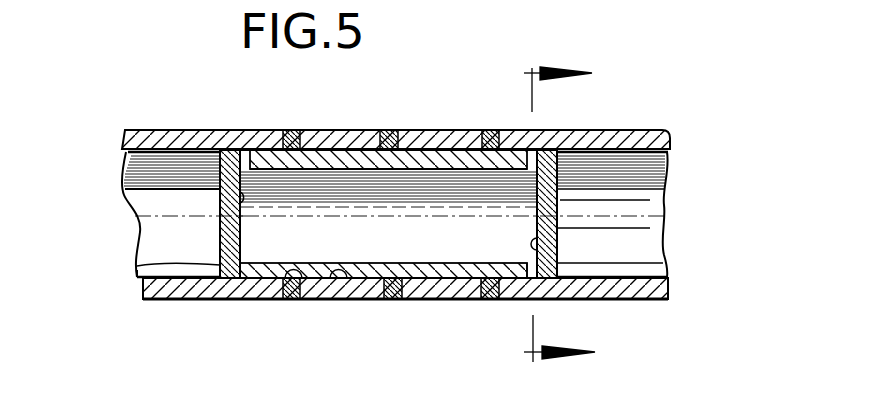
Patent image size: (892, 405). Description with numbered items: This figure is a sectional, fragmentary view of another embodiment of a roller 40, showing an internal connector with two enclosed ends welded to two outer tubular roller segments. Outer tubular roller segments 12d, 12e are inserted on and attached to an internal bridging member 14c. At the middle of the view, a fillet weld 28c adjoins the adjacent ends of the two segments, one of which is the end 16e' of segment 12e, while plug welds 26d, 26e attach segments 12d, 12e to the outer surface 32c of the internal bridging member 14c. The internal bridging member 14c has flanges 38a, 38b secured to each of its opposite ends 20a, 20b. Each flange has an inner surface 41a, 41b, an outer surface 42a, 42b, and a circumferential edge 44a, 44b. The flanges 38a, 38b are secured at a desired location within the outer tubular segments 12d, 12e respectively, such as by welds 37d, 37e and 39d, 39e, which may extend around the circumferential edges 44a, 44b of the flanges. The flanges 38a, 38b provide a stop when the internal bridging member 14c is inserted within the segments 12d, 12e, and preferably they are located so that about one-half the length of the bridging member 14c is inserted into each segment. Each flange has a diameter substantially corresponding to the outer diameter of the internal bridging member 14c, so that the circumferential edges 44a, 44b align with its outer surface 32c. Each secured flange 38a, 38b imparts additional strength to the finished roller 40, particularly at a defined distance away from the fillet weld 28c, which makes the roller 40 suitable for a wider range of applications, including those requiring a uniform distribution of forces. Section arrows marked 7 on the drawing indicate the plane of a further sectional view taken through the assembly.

The roller 40 is at (673, 130).
The adjacent end of outer tubular roller segment 16e' is at (388, 107).
The plug weld 26d is at (290, 130).
The fillet weld 28c is at (392, 130).
The plug weld 26e is at (493, 130).
The circumferential edge 44a is at (233, 276).
The circumferential edge 44b is at (555, 150).
The inner surface 41a is at (239, 197).
The outer surface 42a is at (236, 218).
The inner surface 41b is at (537, 250).
The internal bridging member 14c is at (441, 264).
The opposite end of internal bridging member 20a is at (285, 278).
The outer surface of internal bridging member 32c is at (347, 276).
The opposite end of internal bridging member 20b is at (533, 278).
The flange 38a is at (217, 300).
The outer tubular roller segment 12d is at (200, 133).
The weld 37d is at (215, 162).
The weld 37e is at (134, 272).
The outer tubular roller segment 12e is at (645, 137).
The weld 39d is at (575, 170).
The outer surface 42b is at (650, 200).
The flange 38b is at (650, 228).
The weld 39e is at (663, 264).
The section line 7- 7 is at (559, 217).